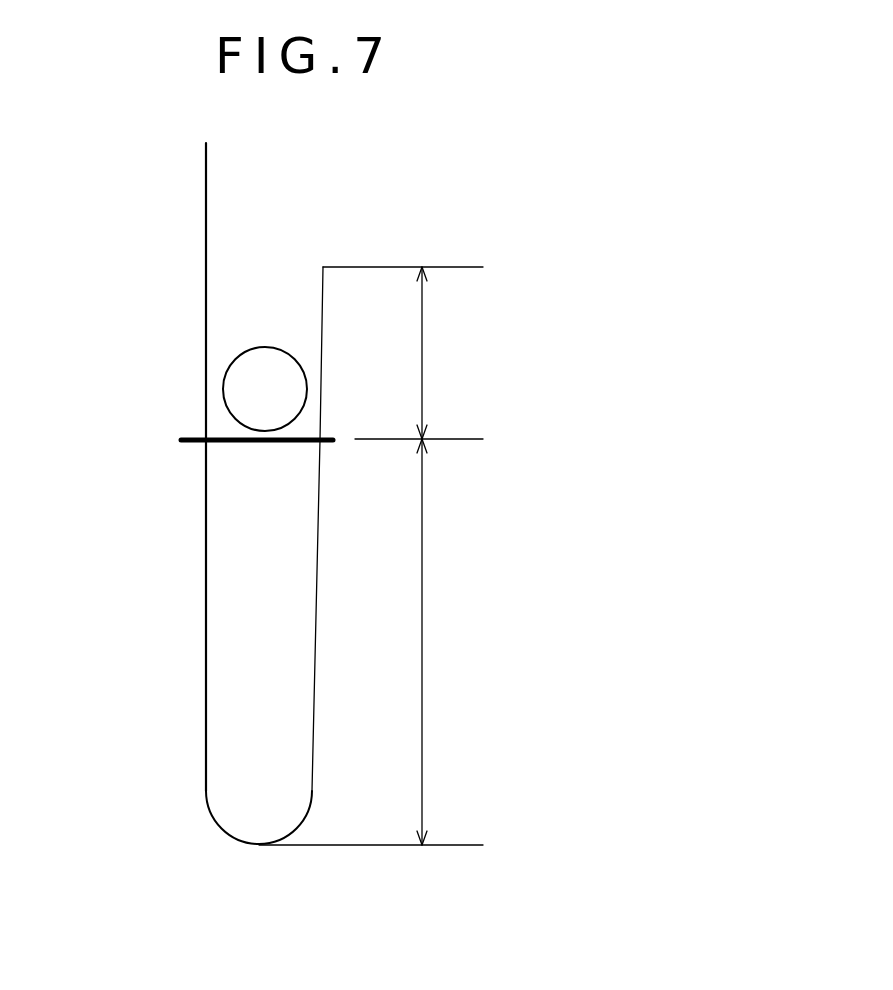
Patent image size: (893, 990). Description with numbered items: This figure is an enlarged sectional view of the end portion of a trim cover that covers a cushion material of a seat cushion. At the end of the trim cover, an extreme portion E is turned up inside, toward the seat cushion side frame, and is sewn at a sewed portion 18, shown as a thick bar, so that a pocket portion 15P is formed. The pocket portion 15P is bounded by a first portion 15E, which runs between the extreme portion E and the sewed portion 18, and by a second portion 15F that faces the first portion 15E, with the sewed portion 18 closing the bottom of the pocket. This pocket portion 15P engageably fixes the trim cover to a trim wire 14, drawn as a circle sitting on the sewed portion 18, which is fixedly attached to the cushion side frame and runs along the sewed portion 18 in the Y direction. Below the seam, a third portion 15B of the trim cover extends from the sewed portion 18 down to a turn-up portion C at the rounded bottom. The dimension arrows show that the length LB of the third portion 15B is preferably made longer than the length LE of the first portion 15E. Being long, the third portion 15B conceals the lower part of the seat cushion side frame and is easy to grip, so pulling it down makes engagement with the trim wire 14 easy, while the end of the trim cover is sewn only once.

The second portion 15F is at (206, 298).
The first portion 15E is at (323, 313).
The third portion 15B is at (207, 563).
The pocket portion 15P is at (256, 302).
The extreme portion E is at (323, 265).
The trim wire 14 is at (224, 385).
The sewed portion 18 is at (181, 440).
The turn-up portion C is at (257, 846).
The length of the first portion LE is at (419, 353).
The length of the third portion LB is at (438, 642).